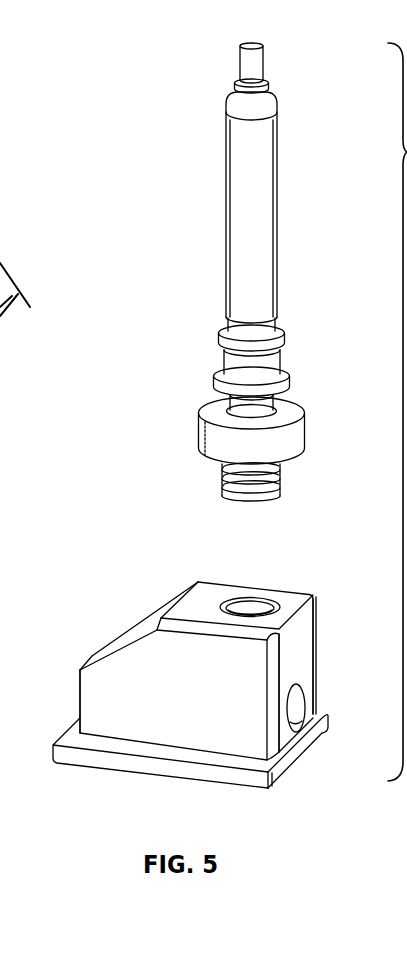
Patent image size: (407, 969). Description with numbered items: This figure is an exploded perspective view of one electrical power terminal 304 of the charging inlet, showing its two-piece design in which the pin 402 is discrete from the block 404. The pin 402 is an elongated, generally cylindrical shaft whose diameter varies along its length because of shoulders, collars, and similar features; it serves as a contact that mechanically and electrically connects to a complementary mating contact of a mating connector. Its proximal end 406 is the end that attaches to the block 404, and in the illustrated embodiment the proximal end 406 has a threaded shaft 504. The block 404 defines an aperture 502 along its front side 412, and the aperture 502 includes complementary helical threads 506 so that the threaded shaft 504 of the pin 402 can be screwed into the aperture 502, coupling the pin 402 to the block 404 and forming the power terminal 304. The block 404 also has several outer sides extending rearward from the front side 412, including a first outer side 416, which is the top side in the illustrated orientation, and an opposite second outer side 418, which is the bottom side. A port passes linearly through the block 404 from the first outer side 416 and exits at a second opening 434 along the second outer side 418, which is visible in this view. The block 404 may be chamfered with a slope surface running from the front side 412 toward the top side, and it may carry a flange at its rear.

The electrical power terminal 304 is at (306, 151).
The pin 402 is at (241, 214).
The proximal end 406 is at (281, 506).
The threaded shaft 504 is at (288, 487).
The block 404 is at (290, 591).
The front side 412 is at (192, 605).
The first outer side 416 is at (80, 705).
The second outer side 418 is at (297, 659).
The aperture 502 is at (248, 597).
The helical threads 506 is at (233, 604).
The second opening 434 is at (303, 728).